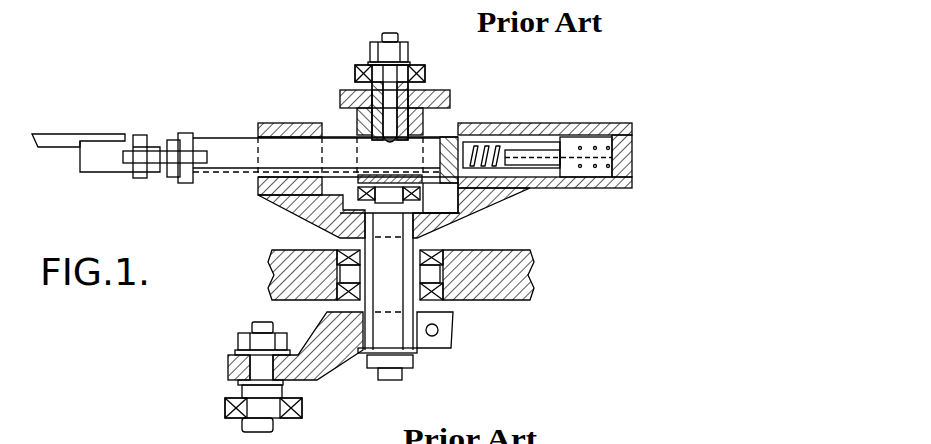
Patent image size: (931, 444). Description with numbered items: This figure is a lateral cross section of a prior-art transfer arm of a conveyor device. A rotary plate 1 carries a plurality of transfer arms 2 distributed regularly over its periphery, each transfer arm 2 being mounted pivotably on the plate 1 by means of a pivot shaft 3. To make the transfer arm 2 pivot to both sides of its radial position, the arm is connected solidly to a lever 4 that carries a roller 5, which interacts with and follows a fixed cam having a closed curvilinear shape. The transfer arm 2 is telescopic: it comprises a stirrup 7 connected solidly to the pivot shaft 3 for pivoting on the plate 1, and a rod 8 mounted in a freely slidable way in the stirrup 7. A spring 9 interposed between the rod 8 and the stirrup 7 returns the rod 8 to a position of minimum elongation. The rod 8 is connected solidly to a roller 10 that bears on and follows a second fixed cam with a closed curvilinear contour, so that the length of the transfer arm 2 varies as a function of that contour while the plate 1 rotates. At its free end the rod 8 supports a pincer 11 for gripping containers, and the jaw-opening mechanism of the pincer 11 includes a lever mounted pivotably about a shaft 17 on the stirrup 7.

The rotary plate 1 is at (496, 278).
The transfer arm 2 is at (303, 120).
The pivot shaft 3 is at (413, 240).
The lever 4 is at (333, 355).
The roller 5 is at (225, 401).
The stirrup 7 is at (527, 180).
The rod 8 is at (227, 153).
The spring 9 is at (498, 138).
The roller 10 is at (415, 61).
The pincer 11 is at (66, 130).
The shaft 17 is at (430, 120).